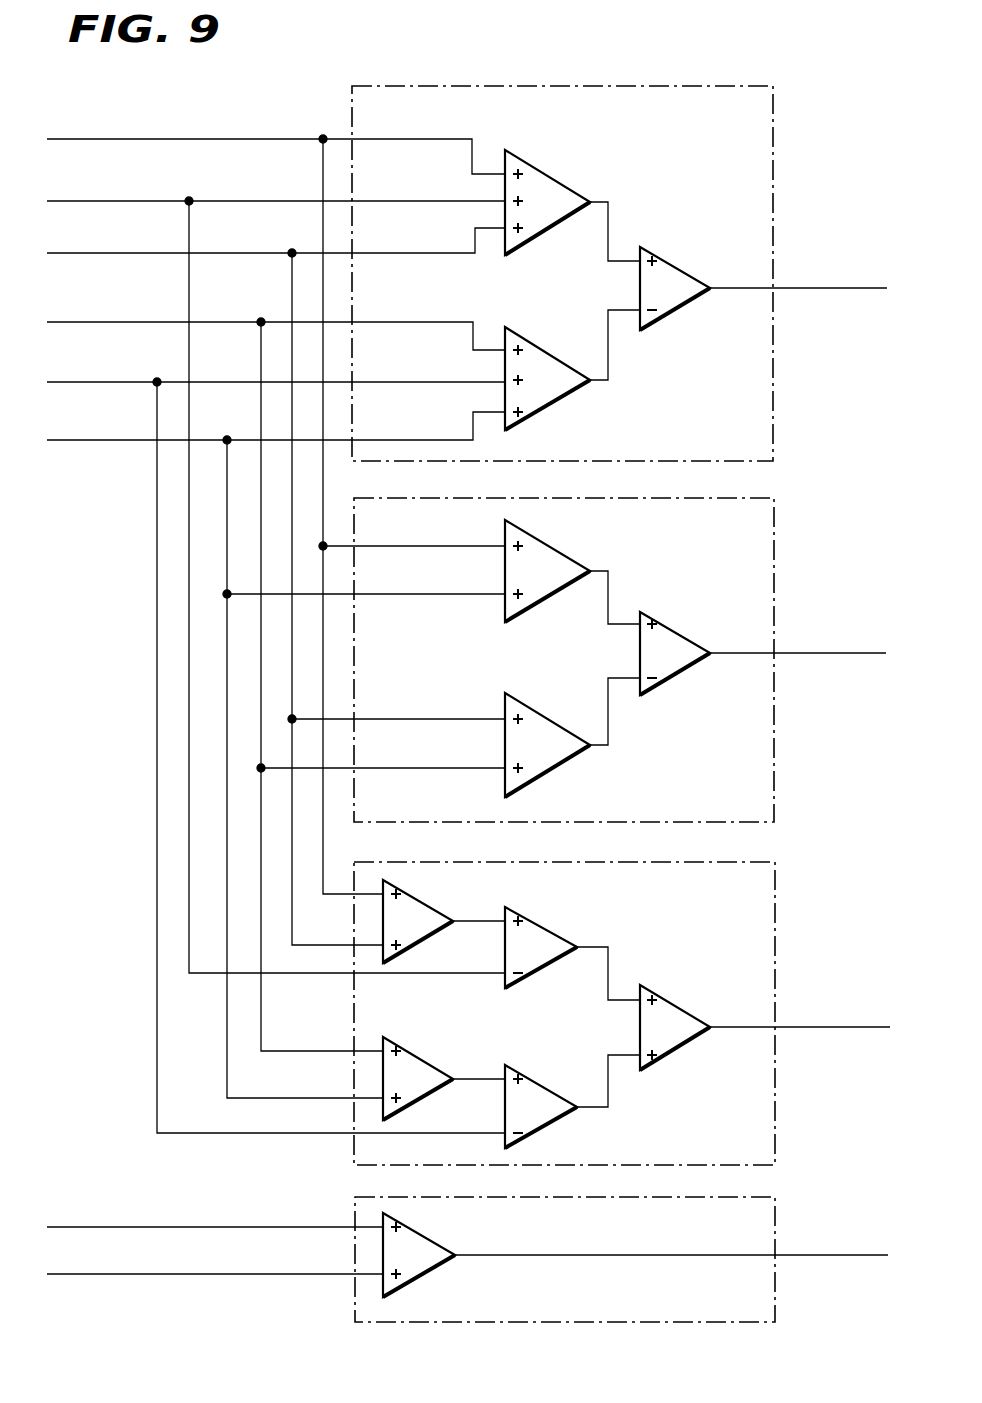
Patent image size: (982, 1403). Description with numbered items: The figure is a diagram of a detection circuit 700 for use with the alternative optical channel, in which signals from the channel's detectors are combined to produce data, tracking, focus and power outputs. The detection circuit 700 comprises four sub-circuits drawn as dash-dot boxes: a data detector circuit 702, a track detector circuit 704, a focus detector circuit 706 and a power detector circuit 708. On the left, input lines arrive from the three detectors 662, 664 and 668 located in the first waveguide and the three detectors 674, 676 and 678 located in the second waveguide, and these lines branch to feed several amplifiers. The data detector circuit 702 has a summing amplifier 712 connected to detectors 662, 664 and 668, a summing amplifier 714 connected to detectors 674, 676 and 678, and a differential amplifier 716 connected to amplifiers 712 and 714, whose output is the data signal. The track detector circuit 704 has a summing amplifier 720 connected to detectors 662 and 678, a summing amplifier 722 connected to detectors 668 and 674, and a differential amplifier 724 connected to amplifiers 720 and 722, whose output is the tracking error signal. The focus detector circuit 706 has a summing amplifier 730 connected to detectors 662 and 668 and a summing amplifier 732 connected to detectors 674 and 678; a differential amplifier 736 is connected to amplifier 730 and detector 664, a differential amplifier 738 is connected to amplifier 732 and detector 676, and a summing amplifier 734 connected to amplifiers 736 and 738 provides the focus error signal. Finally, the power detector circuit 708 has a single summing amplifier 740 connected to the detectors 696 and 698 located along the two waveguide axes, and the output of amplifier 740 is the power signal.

The detector 662 is at (73, 139).
The detector 664 is at (73, 202).
The detector 668 is at (73, 254).
The detector 674 is at (73, 322).
The detector 676 is at (79, 369).
The detector 678 is at (79, 426).
The detector 696 is at (96, 1225).
The detector 698 is at (96, 1272).
The detection circuit 700 is at (202, 1296).
The data detector circuit 702 is at (710, 86).
The track detector circuit 704 is at (732, 478).
The focus detector circuit 706 is at (734, 843).
The power detector circuit 708 is at (736, 1180).
The summing amplifier 712 is at (562, 180).
The summing amplifier 714 is at (554, 354).
The differential amplifier 716 is at (682, 266).
The summing amplifier 720 is at (550, 554).
The summing amplifier 722 is at (550, 724).
The differential amplifier 724 is at (674, 630).
The summing amplifier 730 is at (440, 910).
The summing amplifier 732 is at (426, 1064).
The summing amplifier 734 is at (687, 1006).
The differential amplifier 736 is at (554, 934).
The differential amplifier 738 is at (548, 1084).
The summing amplifier 740 is at (440, 1245).